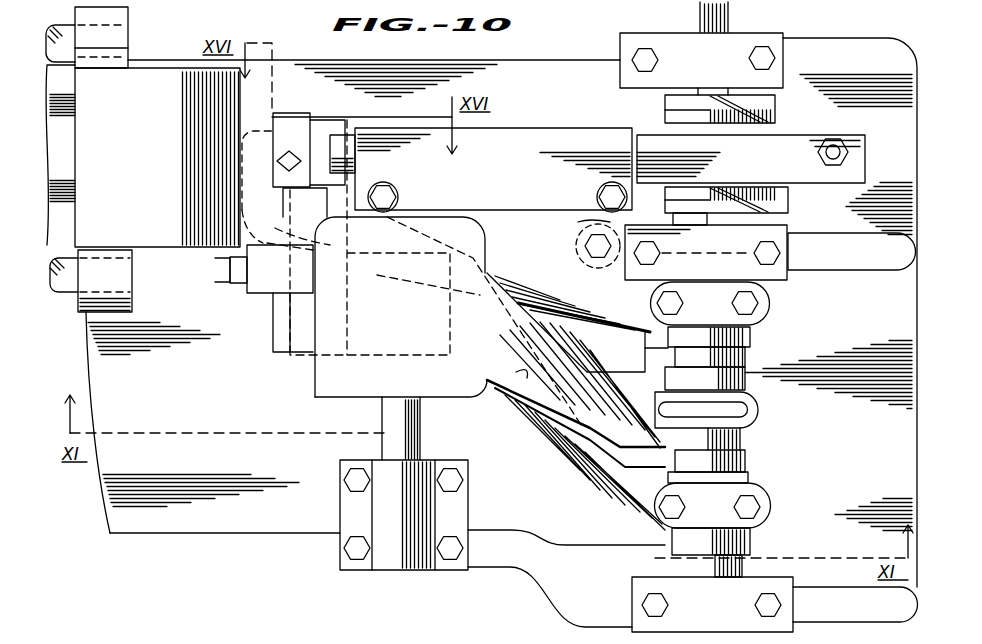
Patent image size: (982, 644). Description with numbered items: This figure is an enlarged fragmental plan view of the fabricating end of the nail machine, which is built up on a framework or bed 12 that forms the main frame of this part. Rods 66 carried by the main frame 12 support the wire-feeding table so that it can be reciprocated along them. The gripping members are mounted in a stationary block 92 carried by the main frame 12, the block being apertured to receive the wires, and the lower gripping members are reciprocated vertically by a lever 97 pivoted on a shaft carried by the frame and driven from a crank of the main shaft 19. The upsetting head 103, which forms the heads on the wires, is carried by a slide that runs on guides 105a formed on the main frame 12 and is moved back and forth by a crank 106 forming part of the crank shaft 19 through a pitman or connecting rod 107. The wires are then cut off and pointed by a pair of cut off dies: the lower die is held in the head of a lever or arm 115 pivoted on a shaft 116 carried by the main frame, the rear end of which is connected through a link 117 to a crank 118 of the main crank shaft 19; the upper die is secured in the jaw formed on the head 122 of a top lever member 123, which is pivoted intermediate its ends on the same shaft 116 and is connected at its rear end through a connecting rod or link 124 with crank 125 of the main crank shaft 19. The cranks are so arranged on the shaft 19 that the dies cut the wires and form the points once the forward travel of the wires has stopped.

The framework or bed 12 is at (163, 523).
The main shaft 19 is at (690, 4).
The rods 66 is at (60, 33).
The stationary block 92 is at (253, 131).
The lever 97 is at (590, 302).
The upsetting head 103 is at (350, 165).
The guides 105a is at (618, 66).
The crank 106 is at (768, 110).
The pitman or connecting rod 107 is at (645, 147).
The lever or arm 115 is at (563, 457).
The shaft 116 is at (388, 440).
The link 117 is at (728, 494).
The crank 118 is at (748, 468).
The head 122 is at (318, 376).
The top lever member 123 is at (527, 376).
The connecting rod or link 124 is at (653, 405).
The crank 125 is at (768, 432).